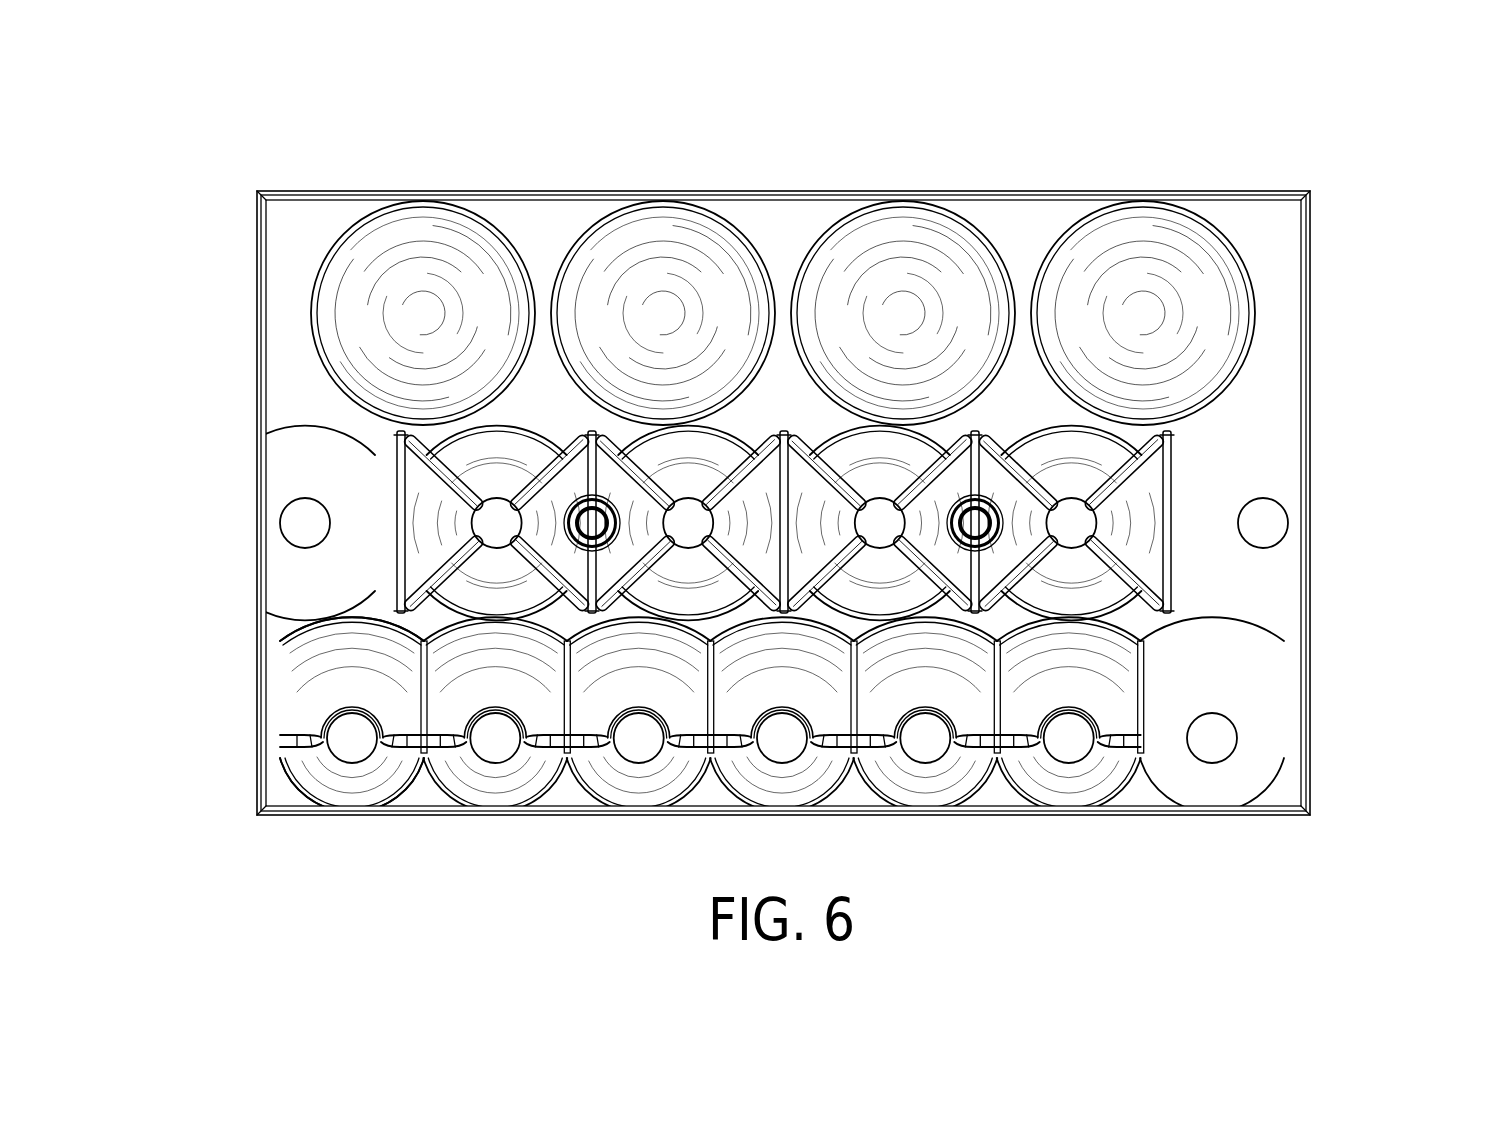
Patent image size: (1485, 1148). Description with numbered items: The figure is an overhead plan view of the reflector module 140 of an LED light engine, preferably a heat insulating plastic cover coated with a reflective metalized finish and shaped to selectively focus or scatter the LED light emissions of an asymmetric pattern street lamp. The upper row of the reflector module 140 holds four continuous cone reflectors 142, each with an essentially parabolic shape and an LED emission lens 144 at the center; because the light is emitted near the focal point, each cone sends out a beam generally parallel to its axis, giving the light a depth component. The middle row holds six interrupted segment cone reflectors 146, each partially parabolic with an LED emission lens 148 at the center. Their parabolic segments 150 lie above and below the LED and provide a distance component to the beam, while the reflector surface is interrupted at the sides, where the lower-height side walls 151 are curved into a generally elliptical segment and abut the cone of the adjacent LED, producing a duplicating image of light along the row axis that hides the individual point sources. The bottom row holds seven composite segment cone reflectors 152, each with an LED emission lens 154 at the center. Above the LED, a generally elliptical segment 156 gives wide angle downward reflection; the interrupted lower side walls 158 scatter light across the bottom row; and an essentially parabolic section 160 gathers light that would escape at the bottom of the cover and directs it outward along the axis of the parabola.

The reflector module 140 is at (675, 140).
The continuous cone reflector 142 is at (1075, 270).
The LED emission lens 144 is at (426, 315).
The interrupted segment cone reflector 146 is at (1265, 476).
The LED emission lens 148 is at (1265, 523).
The parabolic segment 150 is at (293, 420).
The side wall 151 is at (370, 512).
The composite segment cone reflector 152 is at (1245, 673).
The LED emission lens 154 is at (1215, 735).
The elliptical segment 156 is at (283, 640).
The lower side wall 158 is at (258, 692).
The parabolic section 160 is at (317, 777).